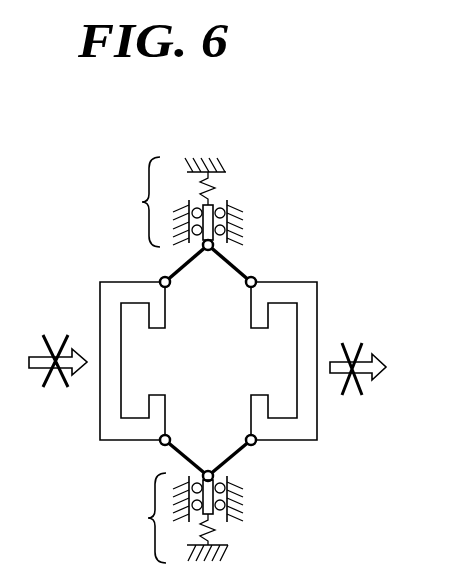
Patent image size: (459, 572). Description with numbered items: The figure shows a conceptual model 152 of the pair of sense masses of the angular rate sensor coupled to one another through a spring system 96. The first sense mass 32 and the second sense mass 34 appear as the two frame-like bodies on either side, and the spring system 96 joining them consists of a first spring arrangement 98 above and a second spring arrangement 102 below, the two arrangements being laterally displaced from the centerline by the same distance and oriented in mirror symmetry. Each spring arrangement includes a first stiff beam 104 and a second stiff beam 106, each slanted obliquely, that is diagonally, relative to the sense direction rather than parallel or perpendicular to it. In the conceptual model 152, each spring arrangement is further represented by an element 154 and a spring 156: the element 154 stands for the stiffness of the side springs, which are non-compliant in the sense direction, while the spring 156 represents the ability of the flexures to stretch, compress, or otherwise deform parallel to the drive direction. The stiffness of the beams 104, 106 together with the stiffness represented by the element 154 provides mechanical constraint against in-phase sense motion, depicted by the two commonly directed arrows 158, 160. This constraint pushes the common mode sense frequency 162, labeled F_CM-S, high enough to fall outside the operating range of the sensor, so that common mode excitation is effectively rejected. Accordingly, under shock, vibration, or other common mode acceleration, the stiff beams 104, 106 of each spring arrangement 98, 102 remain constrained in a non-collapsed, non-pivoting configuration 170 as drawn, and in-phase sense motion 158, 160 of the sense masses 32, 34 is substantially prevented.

The non-collapsed configuration 170 is at (215, 122).
The first sense mass 32 is at (107, 283).
The second sense mass 34 is at (304, 283).
The spring system 96 is at (266, 203).
The first spring arrangement 98 is at (142, 202).
The second spring arrangement 102 is at (148, 518).
The first stiff beam 104 is at (186, 267).
The second stiff beam 106 is at (226, 258).
The element 154 is at (214, 246).
The spring 156 is at (212, 190).
The in-phase sense motion arrow 158 is at (32, 358).
The in-phase sense motion arrow 160 is at (372, 357).
The common mode sense frequency 162 is at (27, 401).
The conceptual model 152 is at (353, 560).